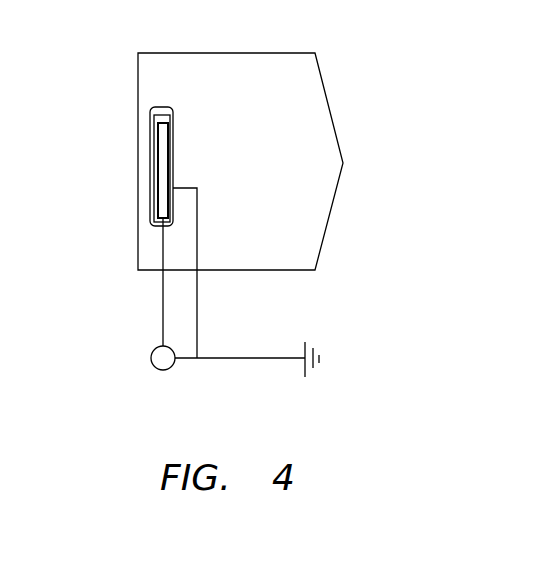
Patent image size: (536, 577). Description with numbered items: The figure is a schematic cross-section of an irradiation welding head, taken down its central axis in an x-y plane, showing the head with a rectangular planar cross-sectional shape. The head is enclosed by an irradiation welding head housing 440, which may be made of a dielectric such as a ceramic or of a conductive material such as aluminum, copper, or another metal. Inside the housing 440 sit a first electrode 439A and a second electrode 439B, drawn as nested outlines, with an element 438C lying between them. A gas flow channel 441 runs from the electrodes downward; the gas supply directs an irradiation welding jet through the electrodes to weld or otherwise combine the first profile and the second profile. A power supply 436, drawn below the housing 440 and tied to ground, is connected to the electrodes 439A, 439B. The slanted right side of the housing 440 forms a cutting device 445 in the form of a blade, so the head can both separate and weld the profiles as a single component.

The irradiation welding head housing 440 is at (320, 205).
The cutting device 445 is at (312, 233).
The first electrode 439A is at (155, 143).
The second electrode 439B is at (163, 150).
The sensor electrode 438C is at (158, 178).
The gas flow channel 441 is at (158, 216).
The power supply 436 is at (156, 360).